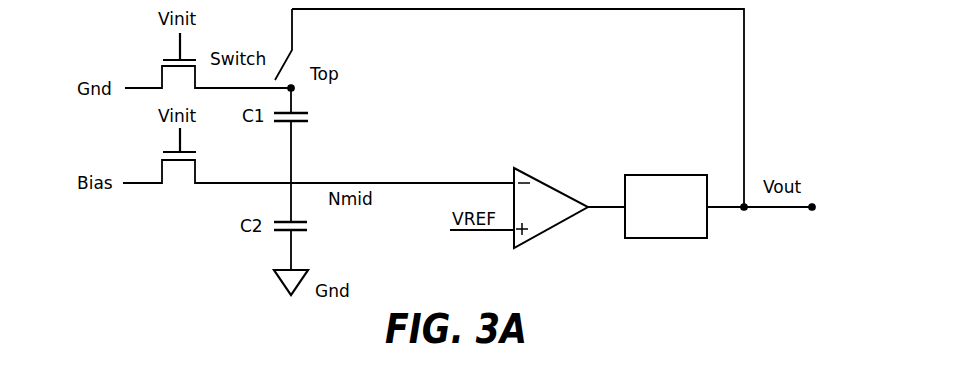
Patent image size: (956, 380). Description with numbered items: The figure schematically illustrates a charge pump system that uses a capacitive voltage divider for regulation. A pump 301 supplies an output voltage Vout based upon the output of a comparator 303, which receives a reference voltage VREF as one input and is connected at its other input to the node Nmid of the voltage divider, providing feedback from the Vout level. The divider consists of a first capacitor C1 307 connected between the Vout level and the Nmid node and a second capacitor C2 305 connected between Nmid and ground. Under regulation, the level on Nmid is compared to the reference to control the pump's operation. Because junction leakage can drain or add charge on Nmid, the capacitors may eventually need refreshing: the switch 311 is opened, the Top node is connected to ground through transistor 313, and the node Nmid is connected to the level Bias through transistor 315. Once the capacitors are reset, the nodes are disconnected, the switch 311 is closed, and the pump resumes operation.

The pump 301 is at (650, 173).
The comparator 303 is at (542, 177).
The second capacitor C2 305 is at (282, 236).
The first capacitor C1 307 is at (283, 126).
The switch 311 is at (287, 54).
The transistor 313 is at (160, 80).
The transistor 315 is at (160, 172).